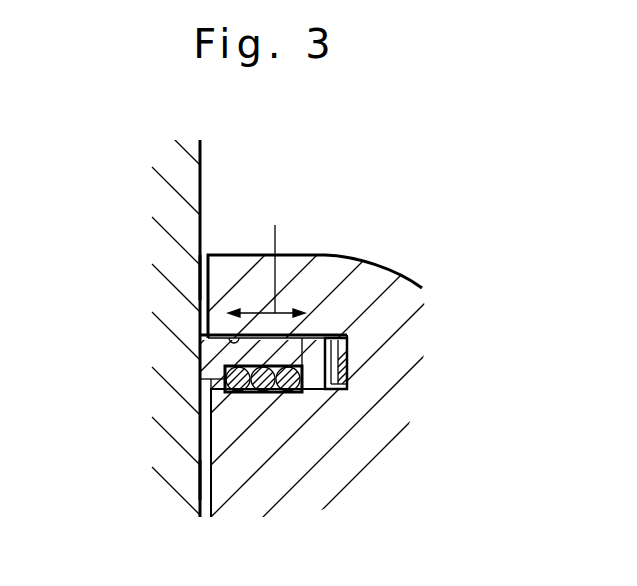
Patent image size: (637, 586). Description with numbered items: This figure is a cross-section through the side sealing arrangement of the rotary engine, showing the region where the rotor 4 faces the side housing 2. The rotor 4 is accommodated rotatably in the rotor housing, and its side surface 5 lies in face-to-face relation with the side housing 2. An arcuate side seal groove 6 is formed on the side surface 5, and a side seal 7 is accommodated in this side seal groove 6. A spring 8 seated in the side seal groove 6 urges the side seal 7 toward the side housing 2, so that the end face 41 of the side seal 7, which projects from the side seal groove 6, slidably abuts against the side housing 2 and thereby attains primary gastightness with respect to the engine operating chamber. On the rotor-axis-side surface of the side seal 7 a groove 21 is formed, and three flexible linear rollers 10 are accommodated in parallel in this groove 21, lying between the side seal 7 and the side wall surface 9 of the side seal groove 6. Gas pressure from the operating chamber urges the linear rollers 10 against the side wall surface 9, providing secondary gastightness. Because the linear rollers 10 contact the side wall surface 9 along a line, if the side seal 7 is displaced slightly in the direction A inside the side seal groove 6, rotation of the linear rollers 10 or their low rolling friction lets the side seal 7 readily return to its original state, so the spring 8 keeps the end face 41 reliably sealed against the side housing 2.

The side housing 2 is at (170, 221).
The rotor 4 is at (260, 277).
The side surface 5 is at (197, 274).
The side seal groove 6 is at (233, 340).
The side seal 7 is at (345, 334).
The spring 8 is at (350, 371).
The side wall surface 9 is at (262, 393).
The flexible linear roller 10 is at (303, 337).
The groove 21 is at (308, 335).
The end face 41 is at (220, 344).
The direction of displacement A is at (266, 254).